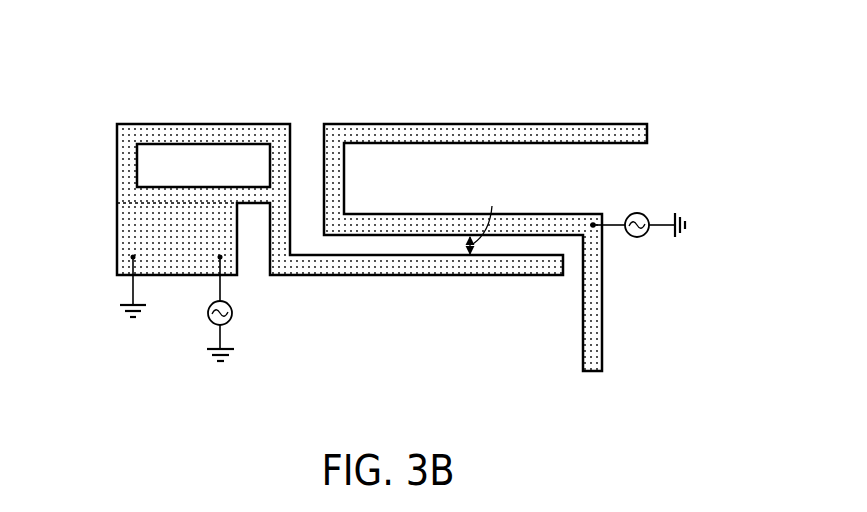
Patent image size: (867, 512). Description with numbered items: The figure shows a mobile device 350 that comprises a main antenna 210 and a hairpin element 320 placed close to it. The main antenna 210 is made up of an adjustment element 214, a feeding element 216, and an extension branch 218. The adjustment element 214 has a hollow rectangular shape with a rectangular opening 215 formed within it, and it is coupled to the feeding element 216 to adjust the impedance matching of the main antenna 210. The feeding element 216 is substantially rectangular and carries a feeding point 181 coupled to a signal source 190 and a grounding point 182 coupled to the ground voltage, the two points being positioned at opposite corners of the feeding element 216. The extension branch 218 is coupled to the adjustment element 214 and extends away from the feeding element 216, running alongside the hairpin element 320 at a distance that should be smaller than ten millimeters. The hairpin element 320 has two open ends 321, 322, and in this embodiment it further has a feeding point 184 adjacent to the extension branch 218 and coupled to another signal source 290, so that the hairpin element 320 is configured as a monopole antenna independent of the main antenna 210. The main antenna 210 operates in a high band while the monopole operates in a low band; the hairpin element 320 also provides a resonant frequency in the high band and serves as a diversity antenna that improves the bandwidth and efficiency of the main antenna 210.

The mobile device 350 is at (110, 87).
The main antenna 210 is at (308, 249).
The adjustment element 214 is at (130, 162).
The opening 215 is at (218, 158).
The feeding element 216 is at (130, 224).
The extension branch 218 is at (418, 265).
The feeding point 181 is at (217, 258).
The grounding point 182 is at (131, 257).
The feeding point 184 is at (592, 223).
The signal source 190 is at (233, 314).
The signal source 290 is at (635, 212).
The hairpin element 320 is at (459, 135).
The open end 321 is at (650, 133).
The open end 322 is at (592, 372).